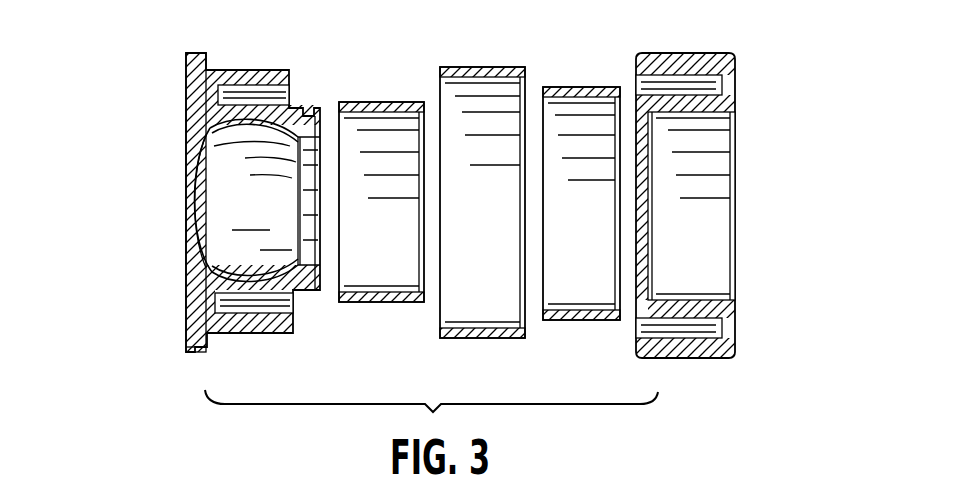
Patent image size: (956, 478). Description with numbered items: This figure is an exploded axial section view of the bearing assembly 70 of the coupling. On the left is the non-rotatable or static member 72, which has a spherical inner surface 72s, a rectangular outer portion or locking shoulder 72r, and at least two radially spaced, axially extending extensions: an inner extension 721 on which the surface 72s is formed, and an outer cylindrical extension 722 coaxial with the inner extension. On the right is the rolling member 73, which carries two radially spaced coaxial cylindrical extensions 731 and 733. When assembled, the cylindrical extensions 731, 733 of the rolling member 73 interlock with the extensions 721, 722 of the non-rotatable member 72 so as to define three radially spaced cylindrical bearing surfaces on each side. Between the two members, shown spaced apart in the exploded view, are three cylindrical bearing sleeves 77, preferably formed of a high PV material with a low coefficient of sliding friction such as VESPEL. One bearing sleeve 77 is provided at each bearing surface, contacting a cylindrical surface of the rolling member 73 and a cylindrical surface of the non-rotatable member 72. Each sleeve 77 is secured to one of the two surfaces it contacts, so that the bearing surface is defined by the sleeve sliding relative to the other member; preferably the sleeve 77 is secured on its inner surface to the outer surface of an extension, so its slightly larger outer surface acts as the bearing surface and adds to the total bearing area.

The bearing assembly 70 is at (764, 162).
The non-rotatable member 72 is at (172, 145).
The inner extension 721 is at (236, 118).
The outer cylindrical extension 722 is at (257, 322).
The spherical inner surface 72s is at (213, 265).
The locking shoulder 72r is at (197, 352).
The rolling member 73 is at (675, 246).
The cylindrical extension 731 is at (693, 300).
The cylindrical extension 733 is at (722, 62).
The cylindrical bearing sleeve 77 is at (366, 246).